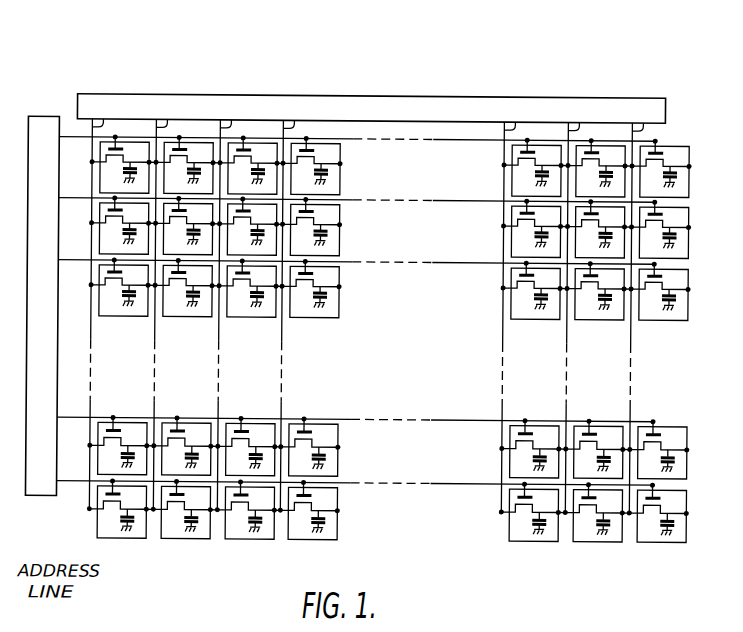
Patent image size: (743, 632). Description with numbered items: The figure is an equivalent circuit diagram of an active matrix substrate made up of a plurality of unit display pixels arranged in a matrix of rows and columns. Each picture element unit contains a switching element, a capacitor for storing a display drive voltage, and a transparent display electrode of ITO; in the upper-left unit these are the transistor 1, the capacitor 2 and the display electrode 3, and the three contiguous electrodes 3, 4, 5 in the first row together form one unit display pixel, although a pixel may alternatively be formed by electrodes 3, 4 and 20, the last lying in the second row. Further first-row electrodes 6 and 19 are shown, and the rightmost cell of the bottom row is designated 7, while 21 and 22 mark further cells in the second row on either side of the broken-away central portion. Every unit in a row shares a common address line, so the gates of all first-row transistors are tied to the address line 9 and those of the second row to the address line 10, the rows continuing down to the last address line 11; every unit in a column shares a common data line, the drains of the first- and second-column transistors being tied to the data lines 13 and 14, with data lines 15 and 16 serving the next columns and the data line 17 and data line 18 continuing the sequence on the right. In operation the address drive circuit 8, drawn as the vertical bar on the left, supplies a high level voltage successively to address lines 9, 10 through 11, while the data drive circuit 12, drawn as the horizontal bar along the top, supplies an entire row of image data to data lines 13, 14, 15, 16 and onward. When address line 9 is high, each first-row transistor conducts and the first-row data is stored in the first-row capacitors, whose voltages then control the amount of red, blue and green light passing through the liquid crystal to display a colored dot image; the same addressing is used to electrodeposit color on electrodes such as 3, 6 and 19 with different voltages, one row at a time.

The transistor 1 is at (109, 149).
The capacitor 2 is at (101, 175).
The display electrode 3 is at (111, 125).
The display electrode 4 is at (200, 150).
The display electrode 5 is at (264, 150).
The display electrode 6 is at (325, 150).
The picture element cell 7 is at (669, 545).
The address drive circuit 8 is at (35, 125).
The address line 9 is at (73, 136).
The address line 10 is at (79, 201).
The address line 11 is at (75, 485).
The data drive circuit 12 is at (93, 96).
The data line 13 is at (101, 127).
The data line 14 is at (163, 125).
The data line 15 is at (228, 125).
The data line 16 is at (292, 125).
The data line 17 is at (376, 73).
The data line 18 is at (509, 126).
The display electrode 19 is at (546, 143).
The display electrode 20 is at (107, 240).
The picture element cell 21 is at (333, 217).
The picture element cell 22 is at (511, 216).